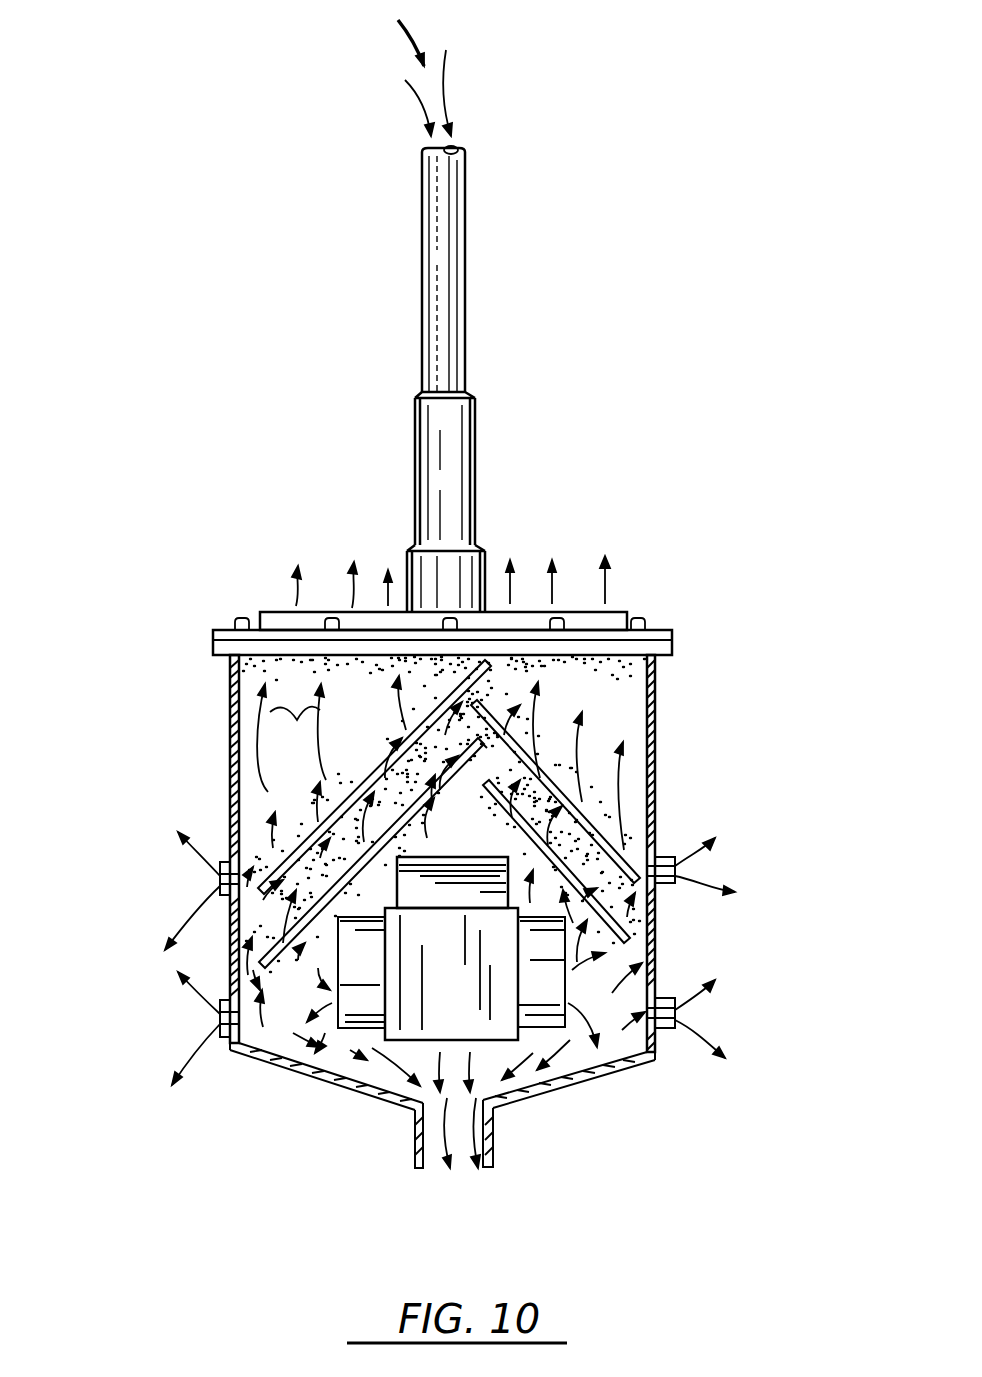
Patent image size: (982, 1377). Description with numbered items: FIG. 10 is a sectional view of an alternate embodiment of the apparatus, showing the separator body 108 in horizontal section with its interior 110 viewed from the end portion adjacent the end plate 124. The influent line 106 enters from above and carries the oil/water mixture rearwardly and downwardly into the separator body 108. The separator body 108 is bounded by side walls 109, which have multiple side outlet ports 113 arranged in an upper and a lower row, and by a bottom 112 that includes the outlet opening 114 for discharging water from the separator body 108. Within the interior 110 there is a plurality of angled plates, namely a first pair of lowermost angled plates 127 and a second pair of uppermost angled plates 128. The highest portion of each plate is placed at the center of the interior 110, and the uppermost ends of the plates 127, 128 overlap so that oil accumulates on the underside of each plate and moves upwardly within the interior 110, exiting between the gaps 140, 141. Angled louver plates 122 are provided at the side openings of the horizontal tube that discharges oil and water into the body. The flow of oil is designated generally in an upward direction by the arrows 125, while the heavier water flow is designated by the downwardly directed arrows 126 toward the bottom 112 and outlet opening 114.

The influent line 106 is at (465, 275).
The separator body 108 is at (672, 646).
The side walls 109 is at (230, 758).
The interior 110 is at (238, 676).
The bottom 112 is at (342, 1078).
The side outlet ports 113 is at (680, 1014).
The outlet opening 114 is at (416, 1172).
The angled louver plates 122 is at (318, 1058).
The end plate 124 is at (455, 934).
The arrows 125 is at (352, 608).
The downwardly directed arrows 126 is at (780, 897).
The lowermost angled plates 127 is at (262, 960).
The uppermost angled plates 128 is at (262, 880).
The gap 140 is at (493, 743).
The gap 141 is at (505, 668).